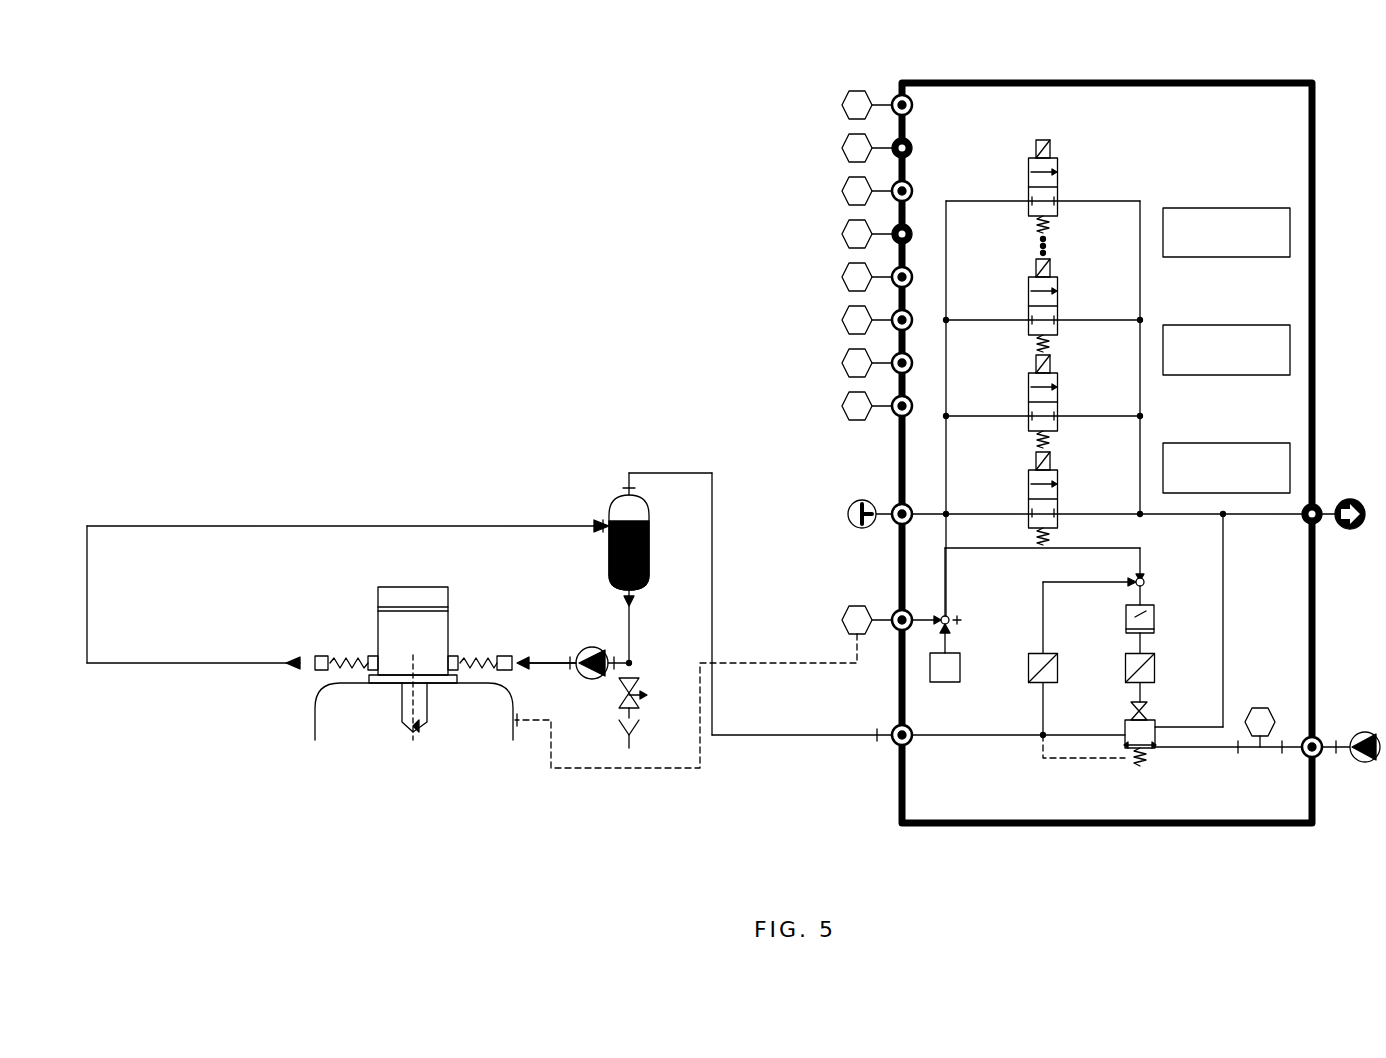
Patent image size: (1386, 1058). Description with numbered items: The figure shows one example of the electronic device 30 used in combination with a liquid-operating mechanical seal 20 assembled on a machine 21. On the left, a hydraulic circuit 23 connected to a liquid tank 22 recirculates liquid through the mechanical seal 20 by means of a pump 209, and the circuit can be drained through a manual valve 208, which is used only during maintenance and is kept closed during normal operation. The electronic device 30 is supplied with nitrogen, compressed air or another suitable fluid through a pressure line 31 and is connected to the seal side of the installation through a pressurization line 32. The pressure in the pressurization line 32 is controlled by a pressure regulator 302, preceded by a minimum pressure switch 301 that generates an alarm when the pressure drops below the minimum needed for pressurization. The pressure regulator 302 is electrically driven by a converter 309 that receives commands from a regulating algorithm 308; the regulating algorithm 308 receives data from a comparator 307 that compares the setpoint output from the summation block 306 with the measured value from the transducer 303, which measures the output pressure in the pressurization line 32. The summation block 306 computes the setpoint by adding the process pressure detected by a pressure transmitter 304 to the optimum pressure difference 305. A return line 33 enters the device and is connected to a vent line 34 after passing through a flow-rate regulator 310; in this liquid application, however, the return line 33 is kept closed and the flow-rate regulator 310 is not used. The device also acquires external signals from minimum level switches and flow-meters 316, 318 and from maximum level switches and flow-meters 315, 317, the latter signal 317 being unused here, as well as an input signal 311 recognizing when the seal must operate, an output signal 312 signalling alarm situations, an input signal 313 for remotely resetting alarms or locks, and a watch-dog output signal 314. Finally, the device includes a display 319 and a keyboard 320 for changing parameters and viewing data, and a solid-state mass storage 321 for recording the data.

The mechanical seal 20 is at (447, 581).
The machine 21 is at (513, 749).
The liquid tank 22 is at (654, 495).
The hydraulic circuit 23 is at (87, 464).
The electronic device 30 is at (905, 828).
The pressure line 31 is at (1344, 731).
The pressurization line 32 is at (712, 748).
The return line 33 is at (881, 498).
The vent line 34 is at (1330, 498).
The manual valve 208 is at (650, 678).
The pump 209 is at (573, 682).
The minimum pressure switch 301 is at (1240, 701).
The pressure regulator 302 is at (1125, 771).
The transducer 303 is at (1064, 652).
The pressure transmitter 304 is at (836, 602).
The optimum pressure difference 305 is at (974, 668).
The summation block 306 is at (968, 690).
The comparator 307 is at (1160, 548).
The regulating algorithm 308 is at (1165, 592).
The converter 309 is at (1160, 692).
The flow-rate regulator 310 is at (946, 136).
The input signal 311 is at (836, 87).
The output signal 312 is at (836, 130).
The input signal 313 is at (836, 173).
The output signal 314 is at (836, 216).
The maximum level switch and flow-meter signal 315 is at (836, 259).
The minimum level switch and flow-meter signal 316 is at (836, 302).
The maximum level switch and flow-meter signal 317 is at (836, 345).
The minimum level switch and flow-meter signal 318 is at (836, 388).
The display 319 is at (1290, 203).
The keyboard 320 is at (1290, 319).
The mass storage 321 is at (1290, 436).